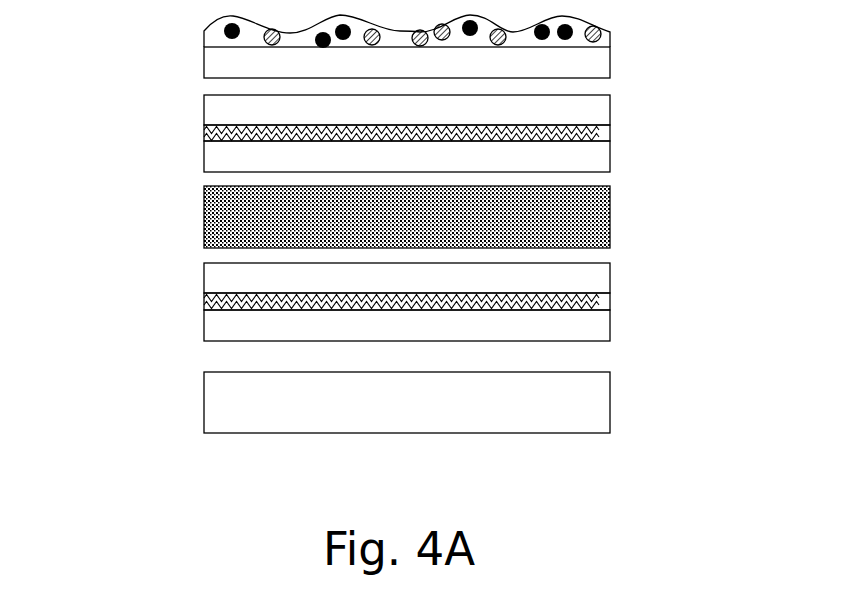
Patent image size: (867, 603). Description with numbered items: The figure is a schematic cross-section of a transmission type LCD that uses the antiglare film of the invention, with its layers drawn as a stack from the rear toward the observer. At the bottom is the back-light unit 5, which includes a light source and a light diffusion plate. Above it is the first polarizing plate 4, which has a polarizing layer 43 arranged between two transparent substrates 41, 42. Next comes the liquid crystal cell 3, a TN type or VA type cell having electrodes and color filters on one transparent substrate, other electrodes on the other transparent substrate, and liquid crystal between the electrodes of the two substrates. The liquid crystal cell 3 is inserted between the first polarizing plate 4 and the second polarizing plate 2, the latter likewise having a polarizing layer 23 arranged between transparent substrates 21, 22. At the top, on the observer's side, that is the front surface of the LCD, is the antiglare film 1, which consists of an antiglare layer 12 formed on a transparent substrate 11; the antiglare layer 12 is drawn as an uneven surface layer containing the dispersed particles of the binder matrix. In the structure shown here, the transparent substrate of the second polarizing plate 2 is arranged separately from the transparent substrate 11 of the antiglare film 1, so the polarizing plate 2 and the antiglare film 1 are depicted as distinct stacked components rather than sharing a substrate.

The antiglare film 1 is at (396, 51).
The transparent substrate 11 is at (228, 59).
The antiglare layer 12 is at (188, 18).
The second polarizing plate 2 is at (371, 140).
The transparent substrate 21 is at (218, 107).
The transparent substrate 22 is at (225, 162).
The polarizing layer 23 is at (205, 131).
The liquid crystal cell 3 is at (592, 235).
The first polarizing plate 4 is at (375, 310).
The transparent substrate 41 is at (222, 275).
The transparent substrate 42 is at (230, 329).
The polarizing layer 43 is at (205, 303).
The back-light unit 5 is at (590, 408).